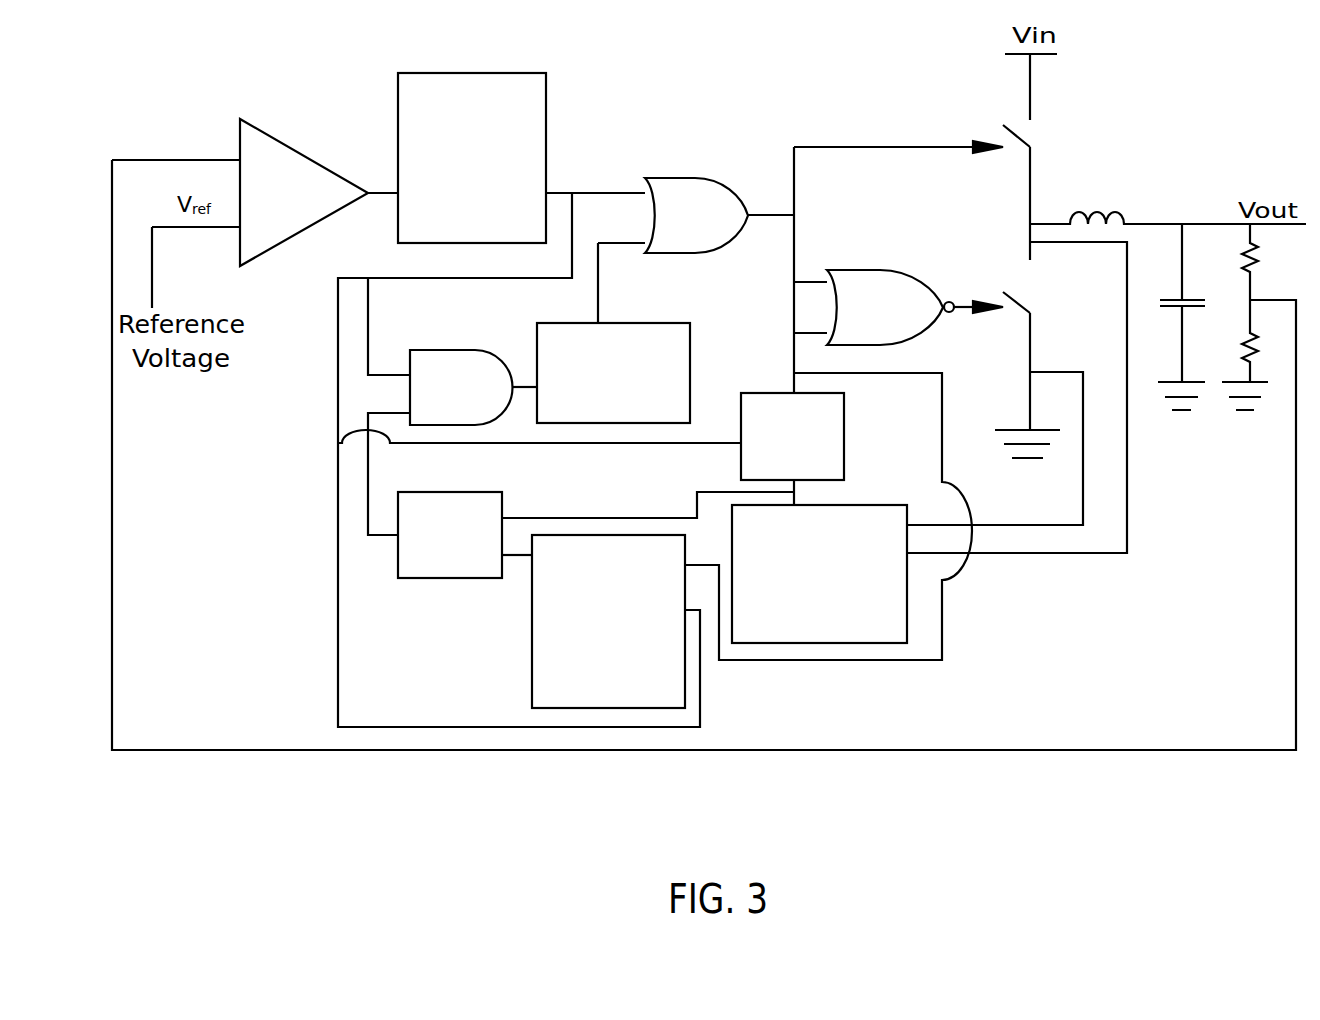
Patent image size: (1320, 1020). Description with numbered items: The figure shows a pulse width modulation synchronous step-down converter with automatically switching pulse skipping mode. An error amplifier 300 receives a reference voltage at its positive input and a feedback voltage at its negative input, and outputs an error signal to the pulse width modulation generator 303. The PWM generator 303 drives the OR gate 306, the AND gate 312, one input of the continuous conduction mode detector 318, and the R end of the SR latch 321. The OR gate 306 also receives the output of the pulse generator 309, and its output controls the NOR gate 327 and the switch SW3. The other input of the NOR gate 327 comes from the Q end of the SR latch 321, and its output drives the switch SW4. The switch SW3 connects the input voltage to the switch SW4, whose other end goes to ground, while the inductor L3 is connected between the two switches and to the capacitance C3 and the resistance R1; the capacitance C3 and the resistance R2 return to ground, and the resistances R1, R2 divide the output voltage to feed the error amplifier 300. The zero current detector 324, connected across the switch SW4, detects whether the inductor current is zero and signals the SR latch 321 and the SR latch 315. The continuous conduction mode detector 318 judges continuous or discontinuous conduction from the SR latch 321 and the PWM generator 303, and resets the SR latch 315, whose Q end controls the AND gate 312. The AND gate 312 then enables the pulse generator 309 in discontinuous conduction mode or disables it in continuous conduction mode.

The error amplifier 300 is at (282, 142).
The pulse width modulation generator 303 is at (494, 240).
The OR gate 306 is at (718, 252).
The pulse generator 309 is at (632, 418).
The AND gate 312 is at (468, 422).
The SR latch 315 is at (450, 578).
The continuous conduction mode detector 318 is at (628, 697).
The SR latch 321 is at (845, 433).
The zero current detector 324 is at (838, 632).
The NOR gate 327 is at (900, 342).
The switch SW3 is at (1044, 184).
The switch SW4 is at (1040, 367).
The inductor L3 is at (1168, 201).
The capacitance C3 is at (1201, 317).
The resistance R1 is at (1269, 262).
The resistance R2 is at (1259, 355).